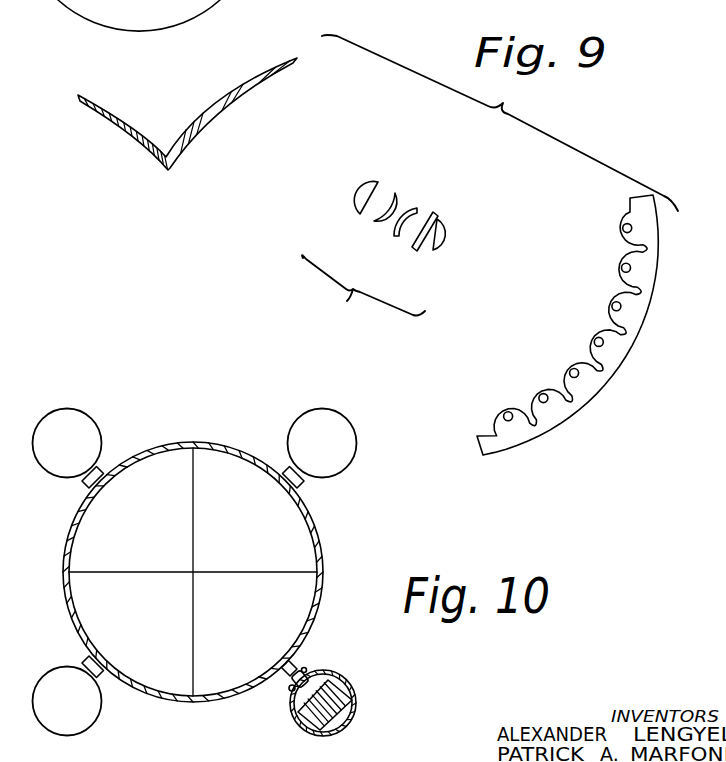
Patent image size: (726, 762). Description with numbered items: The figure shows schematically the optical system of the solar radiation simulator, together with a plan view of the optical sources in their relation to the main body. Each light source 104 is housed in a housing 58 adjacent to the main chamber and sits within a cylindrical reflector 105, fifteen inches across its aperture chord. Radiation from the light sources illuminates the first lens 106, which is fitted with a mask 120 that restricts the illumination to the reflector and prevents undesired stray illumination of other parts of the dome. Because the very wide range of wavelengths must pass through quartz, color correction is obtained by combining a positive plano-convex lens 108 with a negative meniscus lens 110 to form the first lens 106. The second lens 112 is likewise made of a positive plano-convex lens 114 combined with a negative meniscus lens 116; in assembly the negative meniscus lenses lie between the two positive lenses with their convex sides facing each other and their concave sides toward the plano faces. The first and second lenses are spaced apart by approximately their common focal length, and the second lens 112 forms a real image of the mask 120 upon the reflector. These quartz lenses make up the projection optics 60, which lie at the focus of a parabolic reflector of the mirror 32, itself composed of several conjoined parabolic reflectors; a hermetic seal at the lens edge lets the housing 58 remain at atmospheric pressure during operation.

In FIG. 9, the mirror 32 is at (227, 96).
In FIG. 10, the mirror 32 is at (100, 596).
In FIG. 10, the housing 58 is at (84, 456).
In FIG. 9, the projection optics 60 is at (363, 293).
In FIG. 10, the projection optics 60 is at (304, 669).
In FIG. 9, the light source 104 is at (613, 302).
In FIG. 10, the light source 104 is at (350, 703).
In FIG. 9, the cylindrical reflector 105 is at (626, 333).
In FIG. 10, the cylindrical reflector 105 is at (307, 717).
In FIG. 9, the first lens 106 is at (432, 268).
In FIG. 9, the positive plano-convex lens 108 is at (445, 234).
In FIG. 9, the negative meniscus lens 110 is at (417, 209).
In FIG. 9, the second lens 112 is at (388, 174).
In FIG. 9, the positive plano-convex lens 114 is at (359, 200).
In FIG. 9, the negative meniscus lens 116 is at (375, 222).
In FIG. 9, the mask 120 is at (436, 215).